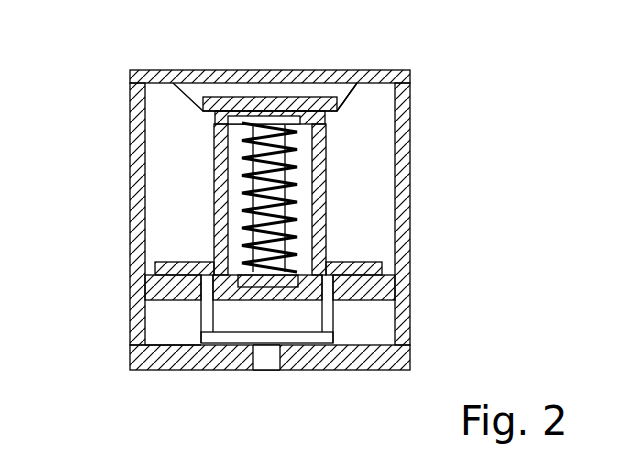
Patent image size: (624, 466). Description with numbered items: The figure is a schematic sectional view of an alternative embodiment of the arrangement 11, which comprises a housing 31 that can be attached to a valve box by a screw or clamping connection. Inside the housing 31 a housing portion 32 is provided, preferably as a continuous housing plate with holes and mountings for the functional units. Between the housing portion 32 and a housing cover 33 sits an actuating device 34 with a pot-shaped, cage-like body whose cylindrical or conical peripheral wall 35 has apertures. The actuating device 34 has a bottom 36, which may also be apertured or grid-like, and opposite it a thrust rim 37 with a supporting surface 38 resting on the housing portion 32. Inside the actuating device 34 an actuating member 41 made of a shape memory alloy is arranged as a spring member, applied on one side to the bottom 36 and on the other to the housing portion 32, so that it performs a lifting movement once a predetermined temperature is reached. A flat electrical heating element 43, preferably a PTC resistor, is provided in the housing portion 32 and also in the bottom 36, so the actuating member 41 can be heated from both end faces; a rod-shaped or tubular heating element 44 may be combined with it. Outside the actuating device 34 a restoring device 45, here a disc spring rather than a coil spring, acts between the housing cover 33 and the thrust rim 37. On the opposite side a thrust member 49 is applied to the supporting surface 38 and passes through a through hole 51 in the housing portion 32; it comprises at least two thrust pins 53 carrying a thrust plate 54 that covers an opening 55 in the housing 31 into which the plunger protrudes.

The arrangement 11 is at (420, 50).
The housing 31 is at (98, 168).
The housing portion 32 is at (398, 300).
The housing cover 33 is at (263, 70).
The actuating device 34 is at (344, 215).
The peripheral wall 35 is at (318, 187).
The bottom 36 is at (278, 112).
The thrust rim 37 is at (382, 268).
The supporting surface 38 is at (210, 275).
The actuating member 41 is at (288, 138).
The heating element 43 is at (220, 126).
The heating element 44 is at (253, 203).
The restoring device 45 is at (359, 113).
The thrust member 49 is at (191, 331).
The through hole 51 is at (207, 305).
The thrust pins 53 is at (328, 320).
The thrust plate 54 is at (305, 335).
The opening 55 is at (262, 368).